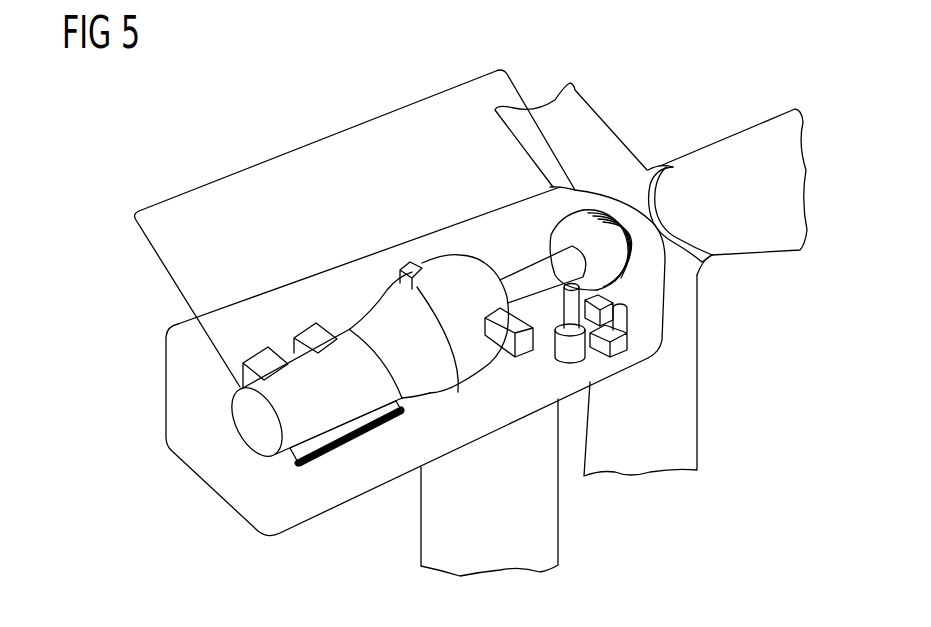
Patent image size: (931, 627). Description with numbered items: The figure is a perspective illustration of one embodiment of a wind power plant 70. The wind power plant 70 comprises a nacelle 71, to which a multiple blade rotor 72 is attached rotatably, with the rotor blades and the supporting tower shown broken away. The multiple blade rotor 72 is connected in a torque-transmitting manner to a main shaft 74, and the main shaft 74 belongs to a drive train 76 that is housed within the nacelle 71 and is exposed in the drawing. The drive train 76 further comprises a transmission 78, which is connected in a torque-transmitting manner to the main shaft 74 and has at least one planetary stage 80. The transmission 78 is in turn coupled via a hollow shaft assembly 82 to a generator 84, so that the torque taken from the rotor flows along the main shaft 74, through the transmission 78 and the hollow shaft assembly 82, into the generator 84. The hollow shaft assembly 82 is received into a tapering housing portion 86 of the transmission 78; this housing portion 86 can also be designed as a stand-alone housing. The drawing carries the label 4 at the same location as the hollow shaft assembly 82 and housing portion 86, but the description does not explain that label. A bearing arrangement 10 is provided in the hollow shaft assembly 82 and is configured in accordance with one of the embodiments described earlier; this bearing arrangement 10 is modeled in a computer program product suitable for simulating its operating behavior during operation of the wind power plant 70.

The wind power plant 70 is at (471, 323).
The drive train 76 is at (327, 139).
The nacelle 71 is at (247, 300).
The multiple blade rotor 72 is at (704, 420).
The main shaft 74 is at (537, 263).
The transmission 78 is at (510, 218).
The planetary stage 80 is at (457, 272).
The hollow shaft assembly 82 is at (393, 297).
The tapering housing portion 86 is at (393, 297).
The electric machine 4 is at (395, 320).
The bearing arrangement 10 is at (427, 354).
The generator 84 is at (250, 440).